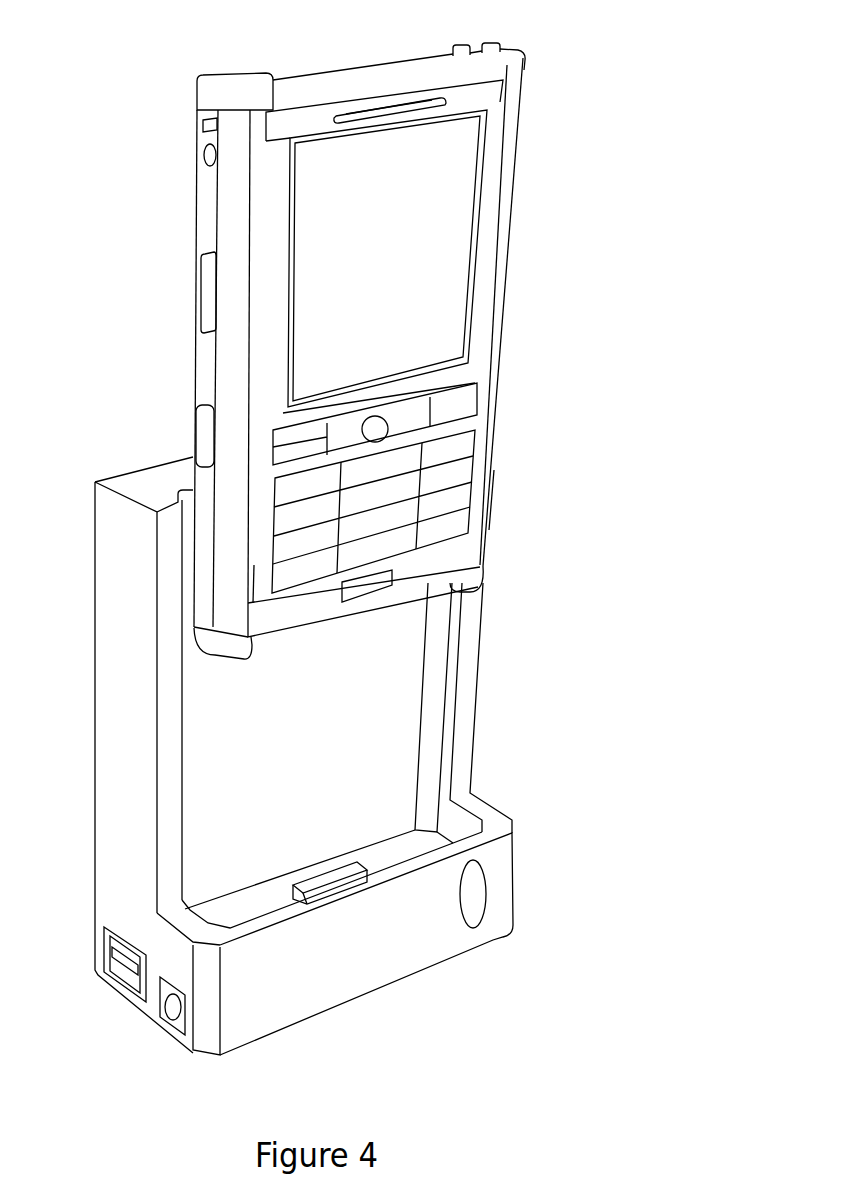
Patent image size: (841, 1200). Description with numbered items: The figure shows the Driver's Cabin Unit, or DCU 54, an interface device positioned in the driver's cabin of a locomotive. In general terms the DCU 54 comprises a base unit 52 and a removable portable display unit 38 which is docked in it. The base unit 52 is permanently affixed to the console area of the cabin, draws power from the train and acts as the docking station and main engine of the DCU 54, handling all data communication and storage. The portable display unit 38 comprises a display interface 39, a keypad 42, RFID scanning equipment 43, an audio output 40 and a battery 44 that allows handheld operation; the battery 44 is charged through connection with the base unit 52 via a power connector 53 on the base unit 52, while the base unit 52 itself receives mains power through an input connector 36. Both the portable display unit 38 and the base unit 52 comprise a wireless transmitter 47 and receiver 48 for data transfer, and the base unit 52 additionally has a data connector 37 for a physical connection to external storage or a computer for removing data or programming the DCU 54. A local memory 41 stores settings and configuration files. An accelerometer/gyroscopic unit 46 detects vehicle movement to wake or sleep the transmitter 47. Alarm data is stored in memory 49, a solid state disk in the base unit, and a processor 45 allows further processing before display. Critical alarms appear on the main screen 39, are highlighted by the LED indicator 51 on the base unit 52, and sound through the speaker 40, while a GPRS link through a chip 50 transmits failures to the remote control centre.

The input connector 36 is at (175, 1025).
The data connector 37 is at (120, 965).
The portable display unit 38 is at (267, 387).
The display interface 39 is at (342, 222).
The audio output 40 is at (363, 102).
The local memory 41 is at (492, 195).
The keypad 42 is at (475, 453).
The RFID scanning equipment 43 is at (492, 515).
The battery 44 is at (480, 565).
The processor 45 is at (413, 618).
The accelerometer/gyroscopic unit 46 is at (105, 612).
The wireless transmitter 47 is at (230, 582).
The receiver 48 is at (230, 627).
The memory 49 is at (353, 695).
The chip 50 is at (318, 808).
The LED indicator 51 is at (477, 905).
The base unit 52 is at (370, 947).
The power connector 53 is at (316, 890).
The Driver's Cabin Unit 54 is at (572, 108).